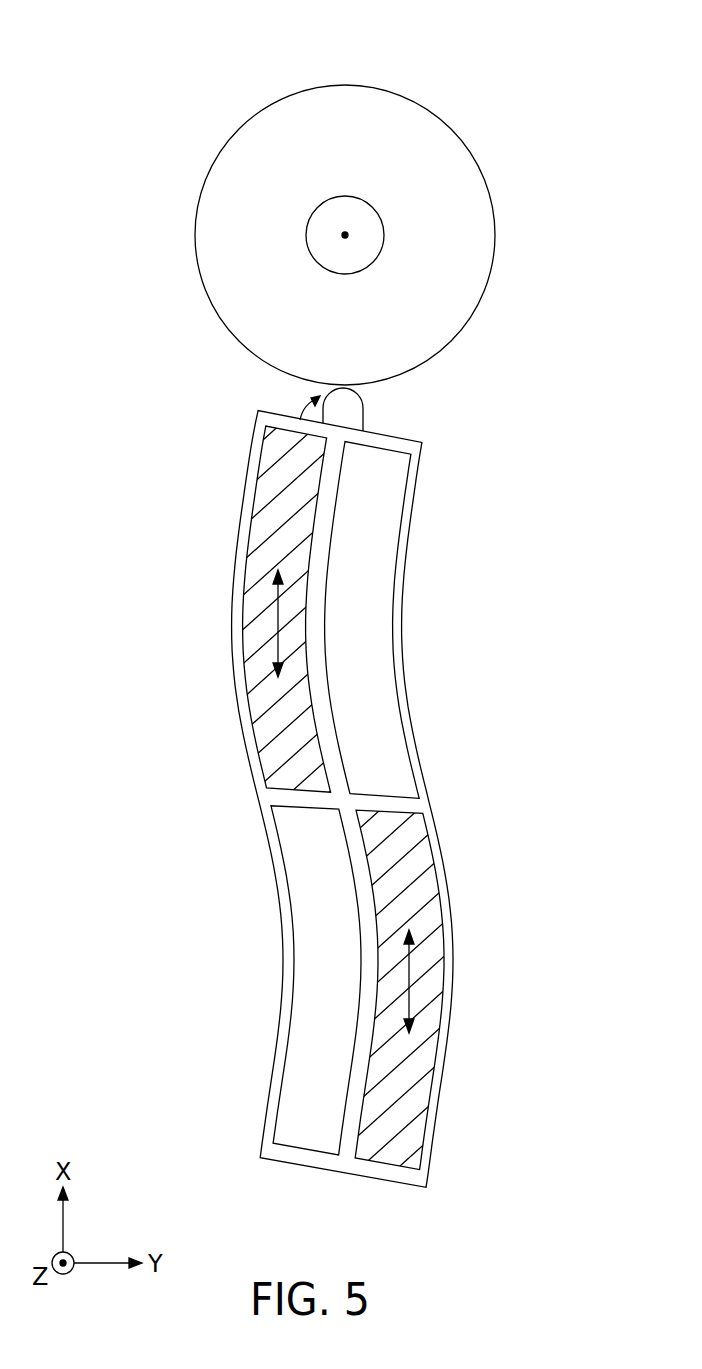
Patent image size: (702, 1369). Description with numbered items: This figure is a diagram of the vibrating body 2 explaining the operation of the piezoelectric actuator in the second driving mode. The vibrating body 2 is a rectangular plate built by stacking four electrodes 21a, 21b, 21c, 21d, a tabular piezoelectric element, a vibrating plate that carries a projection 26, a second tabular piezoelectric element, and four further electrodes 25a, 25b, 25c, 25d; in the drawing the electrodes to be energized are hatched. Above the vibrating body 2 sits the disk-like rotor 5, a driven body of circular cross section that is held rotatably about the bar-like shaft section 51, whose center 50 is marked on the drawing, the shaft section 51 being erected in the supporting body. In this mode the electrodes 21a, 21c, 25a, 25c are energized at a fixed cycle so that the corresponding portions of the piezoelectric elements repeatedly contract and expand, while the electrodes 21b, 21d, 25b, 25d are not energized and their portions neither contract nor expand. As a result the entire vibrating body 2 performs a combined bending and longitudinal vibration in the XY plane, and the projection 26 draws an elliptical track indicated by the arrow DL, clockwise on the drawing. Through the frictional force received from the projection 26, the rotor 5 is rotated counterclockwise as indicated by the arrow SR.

The rotor 5 is at (484, 184).
The rotation center / axis of rotor 50 is at (345, 235).
The shaft section 51 is at (322, 203).
The projection 26 is at (366, 402).
The arrow indicating elliptical track DL is at (303, 414).
The arrow indicating rotor rotation SR is at (451, 180).
The vibrating body 2 is at (403, 592).
The electrode 21a is at (351, 610).
The electrode 25a is at (273, 710).
The electrode 21b is at (269, 980).
The electrode 25b is at (317, 952).
The electrode 21c is at (351, 990).
The electrode 25c is at (403, 877).
The electrode 21d is at (438, 620).
The electrode 25d is at (363, 663).